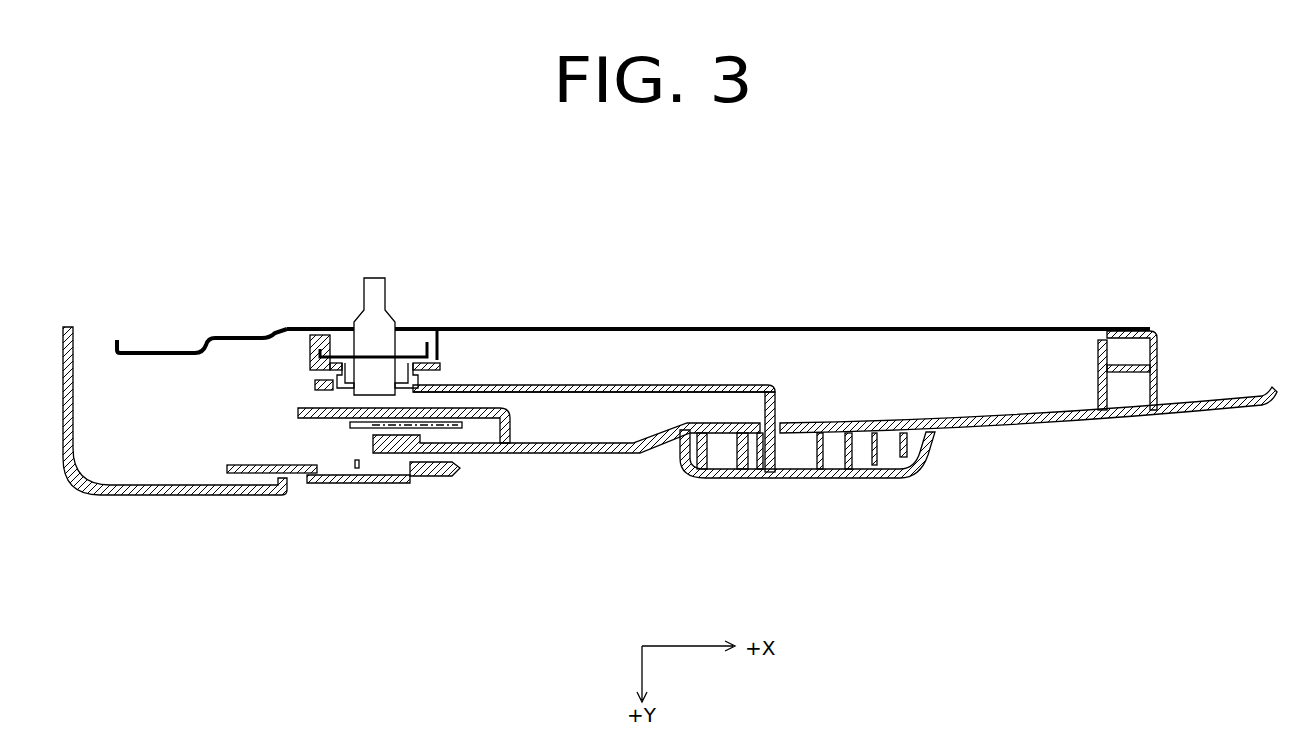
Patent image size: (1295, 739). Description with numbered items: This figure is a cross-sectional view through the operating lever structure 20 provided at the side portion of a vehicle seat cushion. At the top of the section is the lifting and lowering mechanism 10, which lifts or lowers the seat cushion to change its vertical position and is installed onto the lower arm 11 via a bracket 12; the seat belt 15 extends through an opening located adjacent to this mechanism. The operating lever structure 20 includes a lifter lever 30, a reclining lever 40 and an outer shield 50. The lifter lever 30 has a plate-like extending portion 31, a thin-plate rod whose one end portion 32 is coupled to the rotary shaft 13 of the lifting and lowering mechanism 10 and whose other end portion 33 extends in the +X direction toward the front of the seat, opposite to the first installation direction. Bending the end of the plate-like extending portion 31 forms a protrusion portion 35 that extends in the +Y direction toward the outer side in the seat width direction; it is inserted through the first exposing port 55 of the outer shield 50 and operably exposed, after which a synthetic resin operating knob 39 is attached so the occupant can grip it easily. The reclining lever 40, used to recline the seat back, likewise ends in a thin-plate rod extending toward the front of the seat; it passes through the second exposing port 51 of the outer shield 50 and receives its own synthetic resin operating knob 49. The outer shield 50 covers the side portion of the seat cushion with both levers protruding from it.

The lifting and lowering mechanism 10 is at (443, 337).
The lower arm 11 is at (238, 333).
The bracket 12 is at (298, 343).
The rotary shaft 13 is at (368, 302).
The seat belt 15 is at (466, 435).
The operating lever structure 20 is at (1026, 472).
The lifter lever 30 is at (623, 393).
The plate-like extending portion 31 is at (552, 393).
The one end portion 32 is at (312, 390).
The other end portion 33 is at (735, 385).
The protrusion portion 35 is at (777, 410).
The operating knob 39 is at (845, 478).
The reclining lever 40 is at (295, 475).
The operating knob 49 is at (380, 483).
The outer shield 50 is at (185, 495).
The second exposing port 51 is at (333, 452).
The first exposing port 55 is at (767, 475).